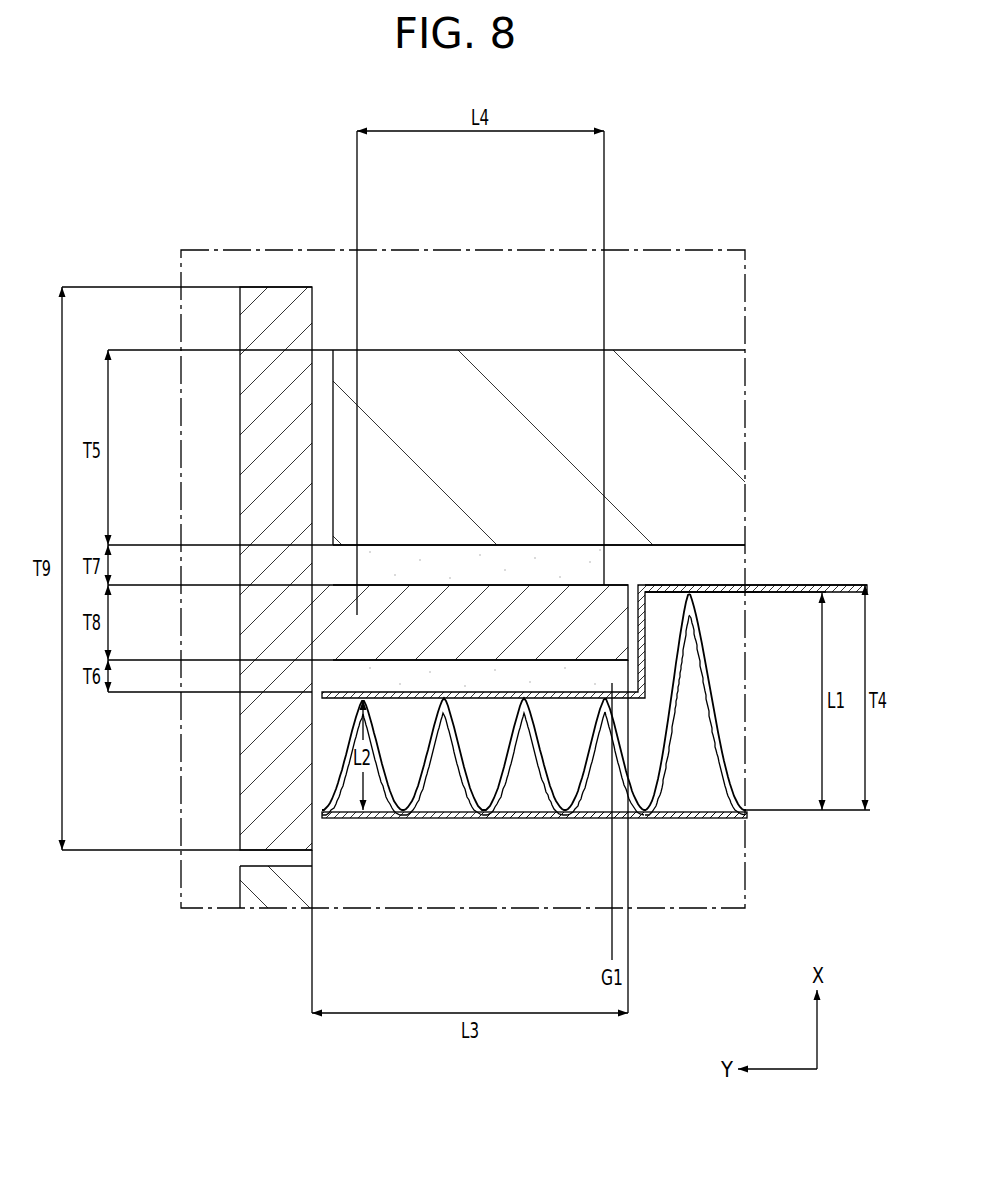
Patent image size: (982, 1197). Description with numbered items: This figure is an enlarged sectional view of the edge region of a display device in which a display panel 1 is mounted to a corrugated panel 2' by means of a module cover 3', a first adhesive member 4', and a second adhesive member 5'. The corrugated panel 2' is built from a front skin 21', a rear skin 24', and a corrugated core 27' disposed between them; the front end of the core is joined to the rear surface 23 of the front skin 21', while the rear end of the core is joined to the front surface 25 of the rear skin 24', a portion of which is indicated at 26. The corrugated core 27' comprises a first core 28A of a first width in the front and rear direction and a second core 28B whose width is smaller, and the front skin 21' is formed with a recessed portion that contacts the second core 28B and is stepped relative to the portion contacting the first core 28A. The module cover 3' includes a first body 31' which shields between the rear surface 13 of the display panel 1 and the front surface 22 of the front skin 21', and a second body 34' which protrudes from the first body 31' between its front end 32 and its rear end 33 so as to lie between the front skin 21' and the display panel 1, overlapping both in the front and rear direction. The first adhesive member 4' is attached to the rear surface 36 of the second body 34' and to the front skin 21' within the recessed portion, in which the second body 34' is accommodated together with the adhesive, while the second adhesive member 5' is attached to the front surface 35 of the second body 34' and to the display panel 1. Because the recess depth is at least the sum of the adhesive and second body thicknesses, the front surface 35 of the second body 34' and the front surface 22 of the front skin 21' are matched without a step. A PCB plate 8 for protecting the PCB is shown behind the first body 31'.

The display panel 1 is at (725, 402).
The corrugated panel 2' is at (594, 730).
The module cover 3' is at (491, 482).
The first adhesive member 4' is at (463, 819).
The second adhesive member 5' is at (484, 376).
The PCB plate 8 is at (253, 887).
The rear surface of the display panel 13 is at (517, 545).
The front skin 21' is at (735, 564).
The front surface of the front skin 22 is at (700, 585).
The rear surface of the front skin 23 is at (727, 593).
The rear skin 24' is at (534, 893).
The front surface of the rear skin 25 is at (512, 818).
The base plate second portion 26 is at (545, 818).
The corrugated core 27' is at (717, 776).
The first core 28A is at (672, 798).
The second core 28B is at (598, 792).
The first body 31' is at (491, 502).
The front end of the first body 32 is at (260, 287).
The rear end of the first body 33 is at (275, 848).
The second body 34' is at (466, 401).
The front surface of the second body 35 is at (547, 585).
The rear surface of the second body 36 is at (408, 660).